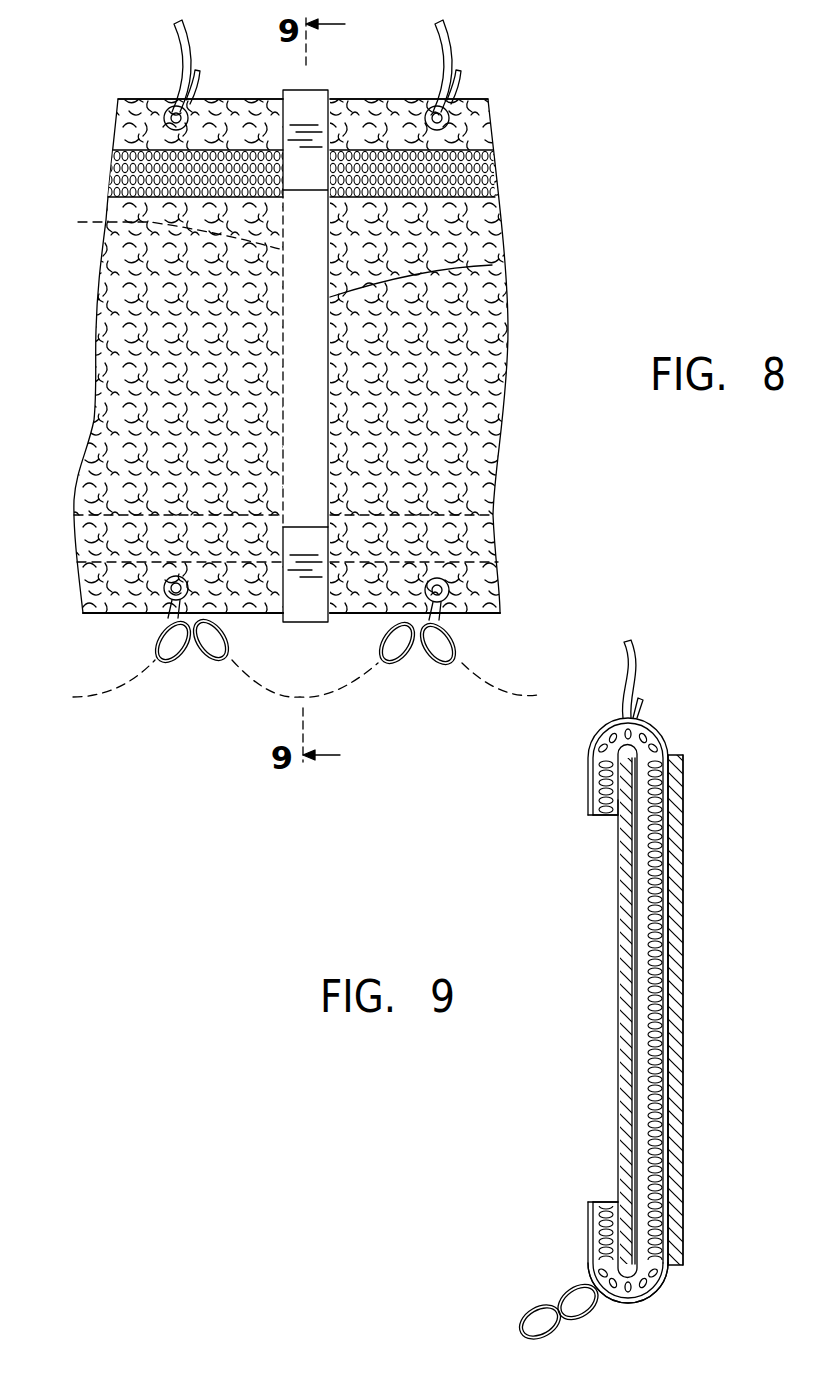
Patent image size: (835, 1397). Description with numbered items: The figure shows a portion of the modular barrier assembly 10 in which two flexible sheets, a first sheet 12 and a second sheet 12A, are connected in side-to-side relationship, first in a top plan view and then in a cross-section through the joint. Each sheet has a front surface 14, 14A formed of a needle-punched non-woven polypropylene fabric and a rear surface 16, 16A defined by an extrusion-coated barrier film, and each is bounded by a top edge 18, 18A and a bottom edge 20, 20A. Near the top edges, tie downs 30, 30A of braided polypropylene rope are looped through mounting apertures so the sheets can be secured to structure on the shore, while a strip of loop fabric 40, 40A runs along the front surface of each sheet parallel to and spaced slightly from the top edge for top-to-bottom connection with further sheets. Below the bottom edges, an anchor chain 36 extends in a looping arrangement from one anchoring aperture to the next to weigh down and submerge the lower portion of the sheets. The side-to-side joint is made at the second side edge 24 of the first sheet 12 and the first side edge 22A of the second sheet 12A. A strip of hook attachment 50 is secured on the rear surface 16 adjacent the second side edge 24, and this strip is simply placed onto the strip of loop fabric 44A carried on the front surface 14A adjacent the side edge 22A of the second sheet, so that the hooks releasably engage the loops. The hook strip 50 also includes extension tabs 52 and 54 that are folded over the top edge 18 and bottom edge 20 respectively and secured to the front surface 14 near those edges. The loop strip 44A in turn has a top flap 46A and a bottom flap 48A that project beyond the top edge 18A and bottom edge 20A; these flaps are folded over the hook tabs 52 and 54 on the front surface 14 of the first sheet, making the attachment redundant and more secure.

In FIG. 8, the modular barrier assembly 10 is at (309, 372).
In FIG. 8, the flexible sheet 12 is at (154, 356).
In FIG. 9, the flexible sheet 12 is at (587, 1011).
In FIG. 8, the second flexible sheet 12A is at (458, 356).
In FIG. 9, the second flexible sheet 12A is at (721, 1010).
In FIG. 8, the front surface 14 is at (100, 400).
In FIG. 9, the front surface 14 is at (620, 915).
In FIG. 8, the front surface of second sheet 14A is at (492, 478).
In FIG. 9, the front surface of second sheet 14A is at (684, 1122).
In FIG. 9, the rear surface 16 is at (633, 962).
In FIG. 9, the rear surface of second sheet 16A is at (686, 1030).
In FIG. 8, the top edge 18 is at (120, 99).
In FIG. 8, the top edge of second sheet 18A is at (482, 98).
In FIG. 8, the bottom edge 20 is at (108, 618).
In FIG. 8, the bottom edge of second sheet 20A is at (488, 616).
In FIG. 8, the first side edge of second sheet 22A is at (155, 227).
In FIG. 8, the second side edge 24 is at (492, 265).
In FIG. 8, the tie down 30 is at (183, 46).
In FIG. 9, the tie down 30 is at (636, 668).
In FIG. 8, the tie down of second sheet 30A is at (455, 48).
In FIG. 8, the anchor chain 36 is at (165, 662).
In FIG. 9, the anchor chain 36 is at (516, 1324).
In FIG. 8, the strip of VELCRO loop fabric 40 is at (122, 172).
In FIG. 8, the strip of VELCRO loop fabric of second sheet 40A is at (492, 160).
In FIG. 9, the strip of VELCRO loop fabric 44A is at (668, 1294).
In FIG. 8, the top flap 46A is at (300, 92).
In FIG. 9, the top flap 46A is at (590, 770).
In FIG. 8, the bottom flap 48A is at (306, 624).
In FIG. 9, the bottom flap 48A is at (590, 1235).
In FIG. 9, the strip of VELCRO hook attachment 50 is at (650, 1064).
In FIG. 9, the extension tab 52 is at (612, 815).
In FIG. 9, the extension tab 54 is at (610, 1200).